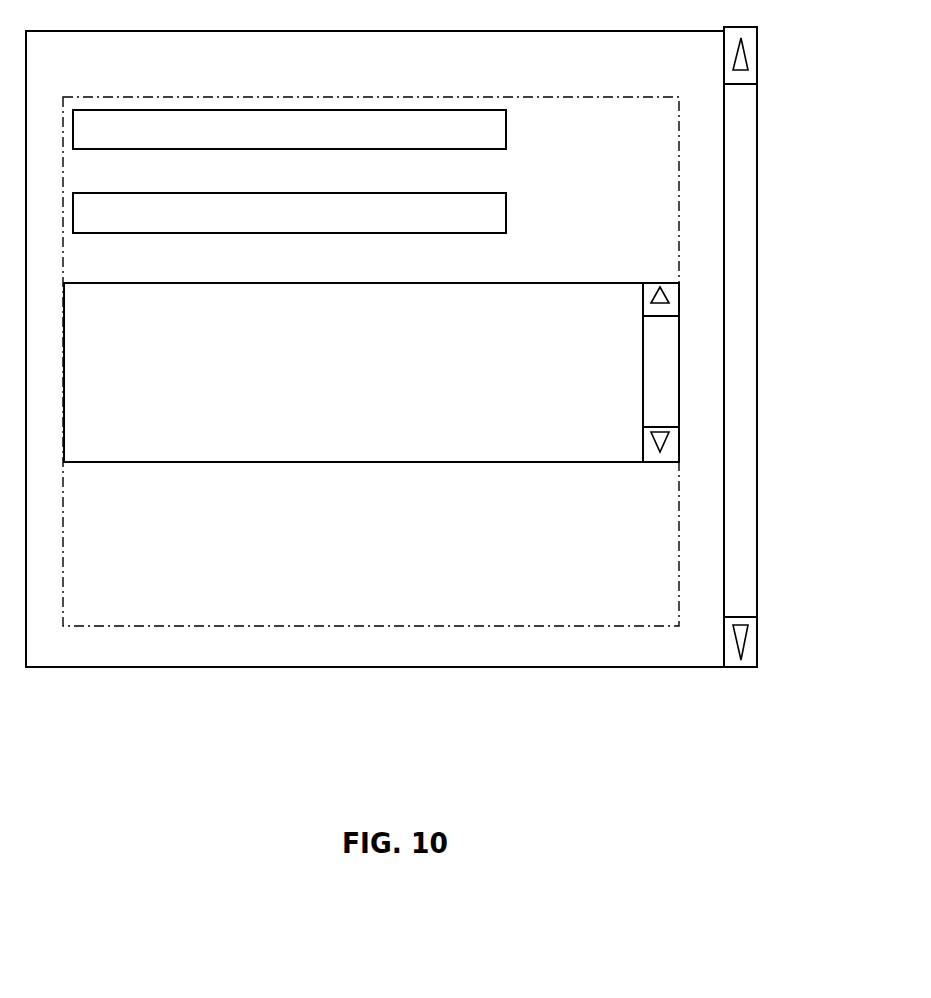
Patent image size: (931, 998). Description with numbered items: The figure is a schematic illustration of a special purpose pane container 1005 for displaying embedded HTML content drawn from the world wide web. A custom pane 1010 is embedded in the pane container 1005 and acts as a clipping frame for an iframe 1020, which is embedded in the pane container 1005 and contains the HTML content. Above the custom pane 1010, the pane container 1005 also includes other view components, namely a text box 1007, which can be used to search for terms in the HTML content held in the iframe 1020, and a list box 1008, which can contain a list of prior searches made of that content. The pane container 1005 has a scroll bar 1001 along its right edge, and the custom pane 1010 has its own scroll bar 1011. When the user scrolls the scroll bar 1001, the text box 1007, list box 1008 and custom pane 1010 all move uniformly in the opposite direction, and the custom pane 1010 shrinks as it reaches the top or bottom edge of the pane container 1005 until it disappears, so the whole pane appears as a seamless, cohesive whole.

The scroll bar 1001 is at (757, 197).
The pane container 1005 is at (375, 349).
The text box 1007 is at (289, 129).
The list box 1008 is at (289, 213).
The custom pane 1010 is at (371, 372).
The scroll bar 1011 is at (643, 378).
The iframe 1020 is at (371, 361).